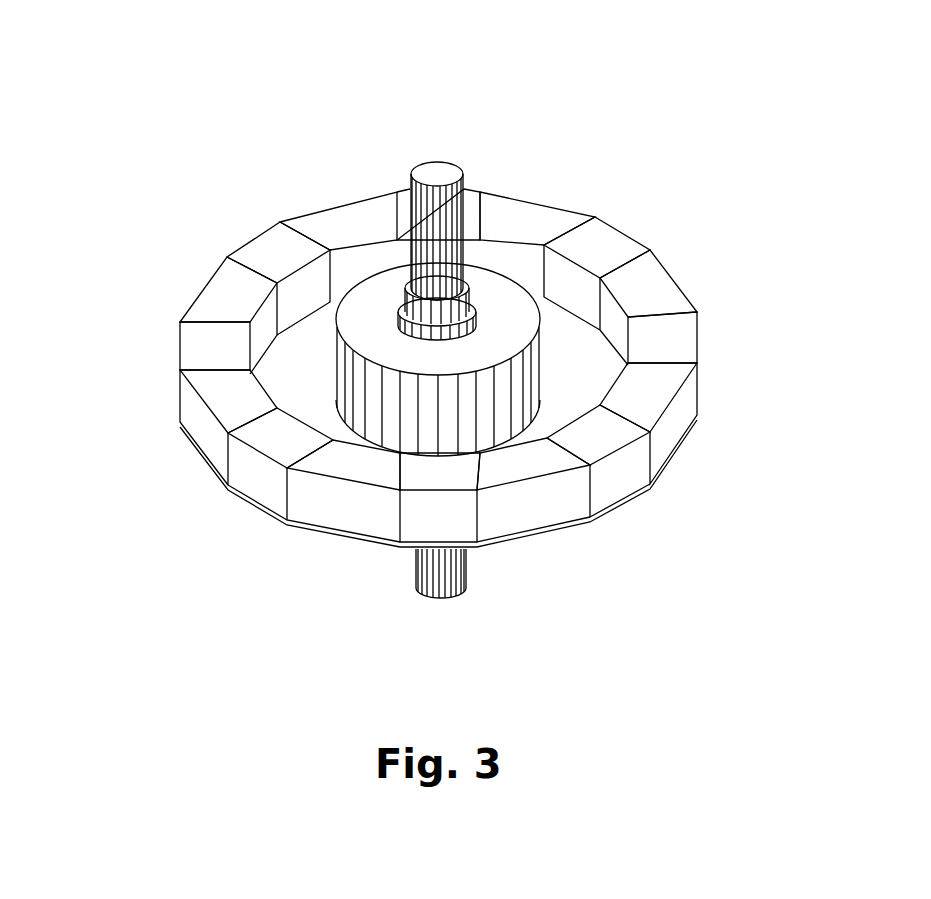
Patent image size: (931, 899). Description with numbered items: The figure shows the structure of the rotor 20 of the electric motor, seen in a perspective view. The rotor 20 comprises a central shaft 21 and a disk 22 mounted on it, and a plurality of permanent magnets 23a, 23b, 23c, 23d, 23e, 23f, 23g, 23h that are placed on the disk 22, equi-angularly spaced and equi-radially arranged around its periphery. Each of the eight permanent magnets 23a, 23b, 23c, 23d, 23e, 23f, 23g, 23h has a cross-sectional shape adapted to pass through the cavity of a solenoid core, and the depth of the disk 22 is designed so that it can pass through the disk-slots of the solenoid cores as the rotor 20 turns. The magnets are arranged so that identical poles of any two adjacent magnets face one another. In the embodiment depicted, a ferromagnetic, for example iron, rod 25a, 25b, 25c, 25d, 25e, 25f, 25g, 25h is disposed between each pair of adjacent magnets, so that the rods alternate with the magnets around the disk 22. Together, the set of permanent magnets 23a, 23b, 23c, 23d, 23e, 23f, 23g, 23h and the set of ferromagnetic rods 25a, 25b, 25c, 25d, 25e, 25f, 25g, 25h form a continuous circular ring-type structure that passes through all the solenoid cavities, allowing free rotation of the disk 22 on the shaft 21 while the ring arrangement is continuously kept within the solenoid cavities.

The rotor 20 is at (107, 147).
The shaft 21 is at (432, 165).
The disk 22 is at (573, 355).
The permanent magnet 23a is at (420, 480).
The permanent magnet 23b is at (598, 440).
The permanent magnet 23c is at (692, 350).
The permanent magnet 23d is at (602, 235).
The permanent magnet 23e is at (407, 207).
The permanent magnet 23f is at (270, 240).
The permanent magnet 23g is at (208, 339).
The permanent magnet 23h is at (250, 440).
The ferromagnetic rod 25a is at (525, 465).
The ferromagnetic rod 25b is at (650, 393).
The ferromagnetic rod 25c is at (665, 286).
The ferromagnetic rod 25d is at (530, 213).
The ferromagnetic rod 25e is at (340, 223).
The ferromagnetic rod 25f is at (237, 293).
The ferromagnetic rod 25g is at (222, 396).
The ferromagnetic rod 25h is at (345, 468).